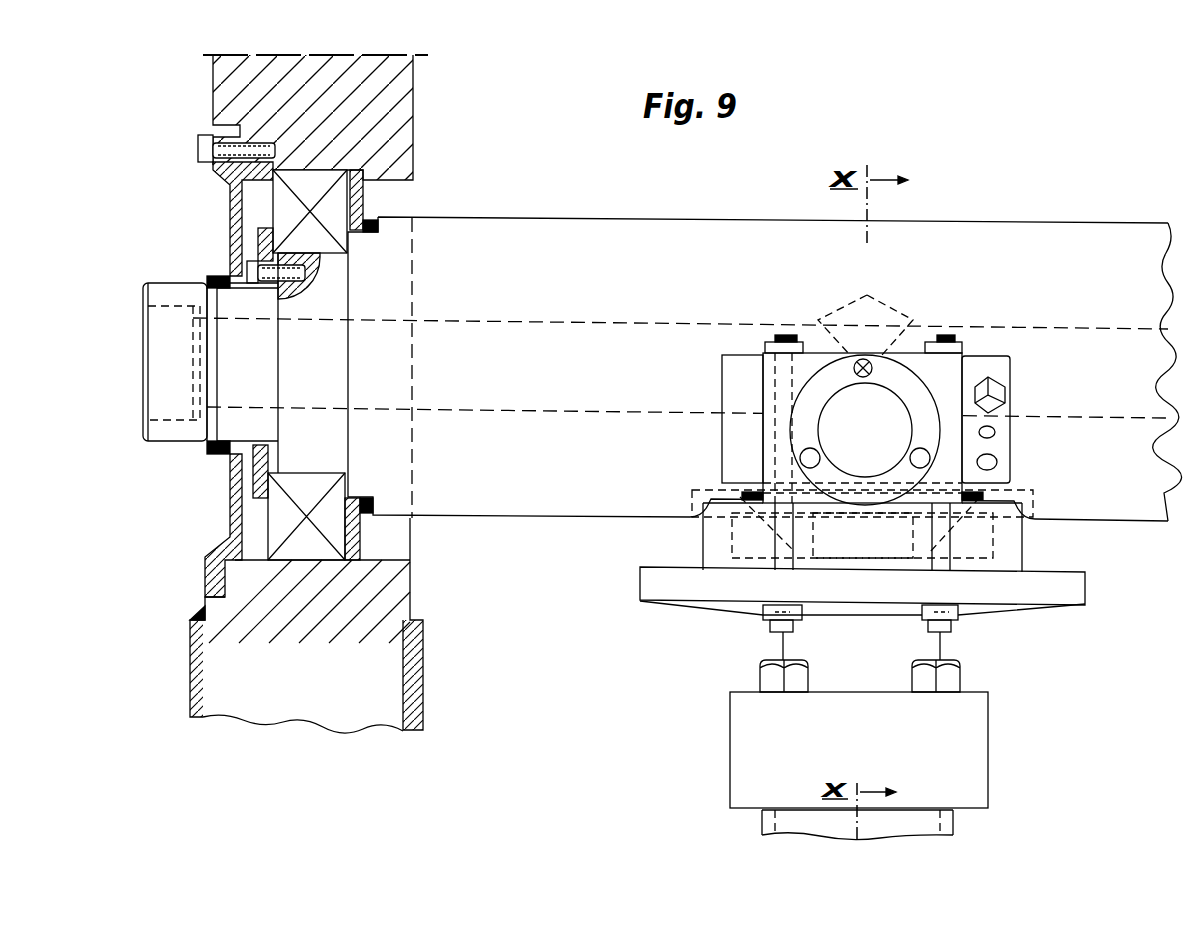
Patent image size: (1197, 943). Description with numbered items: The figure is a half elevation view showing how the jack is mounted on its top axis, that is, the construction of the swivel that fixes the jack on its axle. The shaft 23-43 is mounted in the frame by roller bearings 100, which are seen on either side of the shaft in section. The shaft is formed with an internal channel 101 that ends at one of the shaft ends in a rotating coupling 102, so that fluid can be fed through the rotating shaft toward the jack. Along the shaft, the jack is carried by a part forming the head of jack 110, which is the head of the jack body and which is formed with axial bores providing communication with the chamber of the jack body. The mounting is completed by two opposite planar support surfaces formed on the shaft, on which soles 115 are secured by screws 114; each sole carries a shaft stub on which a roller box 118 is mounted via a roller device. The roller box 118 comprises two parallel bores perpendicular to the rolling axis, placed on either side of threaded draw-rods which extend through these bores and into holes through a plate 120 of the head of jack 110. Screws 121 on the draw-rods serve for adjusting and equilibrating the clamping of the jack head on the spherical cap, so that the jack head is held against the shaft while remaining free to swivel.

The roller bearings 100 is at (278, 520).
The channel 101 is at (242, 395).
The rotating coupling 102 is at (173, 290).
The shaft 23-43 is at (578, 503).
The roller box 118 is at (900, 372).
The soles 115 is at (1010, 365).
The screws 114 is at (993, 398).
The head of jack 110 is at (1018, 558).
The screws 121 is at (957, 614).
The plate 120 is at (950, 633).